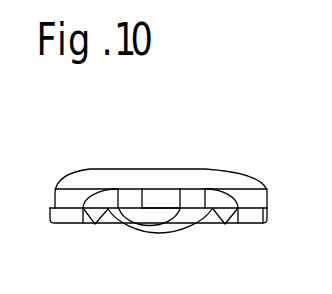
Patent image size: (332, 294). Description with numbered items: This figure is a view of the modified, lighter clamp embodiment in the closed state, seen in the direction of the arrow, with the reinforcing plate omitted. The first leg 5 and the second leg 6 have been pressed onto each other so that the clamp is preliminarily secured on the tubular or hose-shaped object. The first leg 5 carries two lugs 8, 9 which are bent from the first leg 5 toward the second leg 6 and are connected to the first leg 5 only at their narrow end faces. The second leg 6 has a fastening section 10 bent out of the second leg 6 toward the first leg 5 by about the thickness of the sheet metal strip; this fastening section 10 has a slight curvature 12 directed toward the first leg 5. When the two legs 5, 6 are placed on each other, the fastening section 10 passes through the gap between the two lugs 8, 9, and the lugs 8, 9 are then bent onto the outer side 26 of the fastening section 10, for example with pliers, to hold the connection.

The first leg 5 is at (268, 221).
The second leg 6 is at (259, 196).
The lug 8 is at (128, 194).
The lug 9 is at (195, 196).
The fastening section 10 is at (154, 227).
The curvature 12 is at (173, 233).
The outer side 26 is at (150, 211).